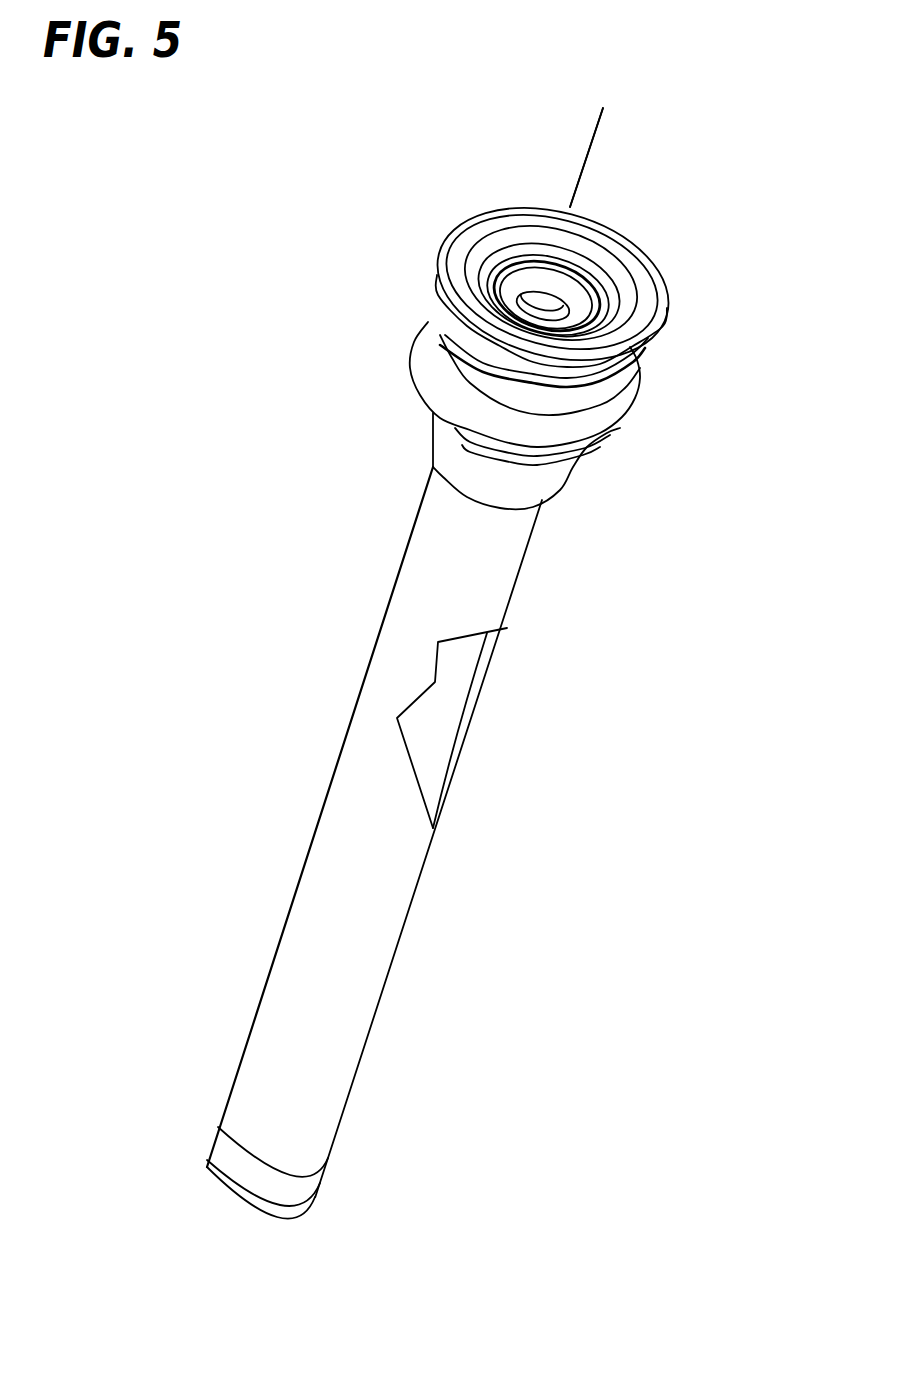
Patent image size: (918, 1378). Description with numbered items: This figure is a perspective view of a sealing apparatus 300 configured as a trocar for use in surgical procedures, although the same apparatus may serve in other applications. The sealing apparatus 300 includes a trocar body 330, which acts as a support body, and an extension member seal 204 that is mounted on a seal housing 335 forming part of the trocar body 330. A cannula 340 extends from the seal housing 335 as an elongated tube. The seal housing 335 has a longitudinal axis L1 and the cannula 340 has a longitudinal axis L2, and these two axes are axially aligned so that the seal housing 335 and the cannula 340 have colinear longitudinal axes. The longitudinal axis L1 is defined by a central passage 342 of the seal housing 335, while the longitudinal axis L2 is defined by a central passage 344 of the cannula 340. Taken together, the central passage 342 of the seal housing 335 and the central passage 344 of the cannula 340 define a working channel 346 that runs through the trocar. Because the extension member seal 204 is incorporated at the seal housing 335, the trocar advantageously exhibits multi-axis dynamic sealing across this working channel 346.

The sealing apparatus 300 is at (488, 144).
The central passage of the seal housing 342 is at (502, 247).
The working channel 346 is at (542, 307).
The extension member seal 204 is at (582, 302).
The longitudinal axis of the seal housing L1 is at (583, 172).
The longitudinal axis of the cannula L2 is at (586, 157).
The seal housing 335 is at (620, 437).
The trocar body 330 is at (443, 450).
The cannula 340 is at (372, 898).
The central passage of the cannula 344 is at (431, 726).